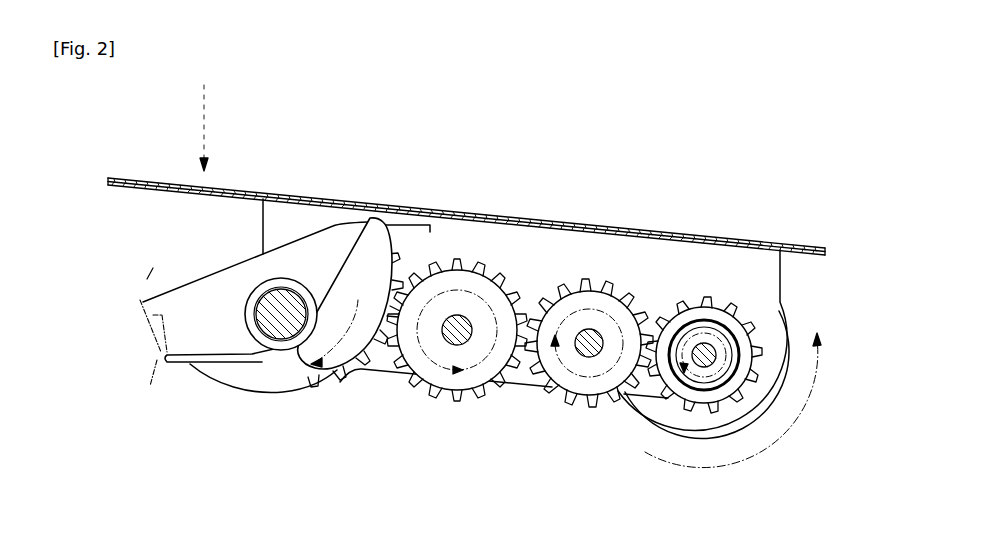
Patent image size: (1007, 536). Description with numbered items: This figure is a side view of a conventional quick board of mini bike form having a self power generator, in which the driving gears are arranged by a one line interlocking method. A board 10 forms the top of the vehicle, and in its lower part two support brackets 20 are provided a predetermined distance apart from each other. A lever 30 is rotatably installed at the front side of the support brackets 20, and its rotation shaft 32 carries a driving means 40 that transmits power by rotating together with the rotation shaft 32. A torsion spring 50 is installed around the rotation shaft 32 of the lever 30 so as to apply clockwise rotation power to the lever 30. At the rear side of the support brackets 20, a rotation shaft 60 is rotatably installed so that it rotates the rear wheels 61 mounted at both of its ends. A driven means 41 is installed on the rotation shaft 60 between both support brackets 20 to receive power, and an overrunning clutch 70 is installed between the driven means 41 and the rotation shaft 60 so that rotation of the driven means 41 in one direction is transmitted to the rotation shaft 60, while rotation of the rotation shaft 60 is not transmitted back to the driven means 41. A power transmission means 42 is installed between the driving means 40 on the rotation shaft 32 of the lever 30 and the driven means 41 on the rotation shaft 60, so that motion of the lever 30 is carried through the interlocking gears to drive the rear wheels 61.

The board 10 is at (185, 178).
The support bracket 20 is at (677, 266).
The lever 30 is at (142, 300).
The rotation shaft 32 is at (281, 330).
The driving means 40 is at (346, 386).
The driven means 41 is at (738, 395).
The power transmission means 42 is at (475, 392).
The torsion spring 50 is at (253, 338).
The rotation shaft 60 is at (707, 385).
The rear wheel 61 is at (773, 393).
The overrunning clutch 70 is at (685, 368).